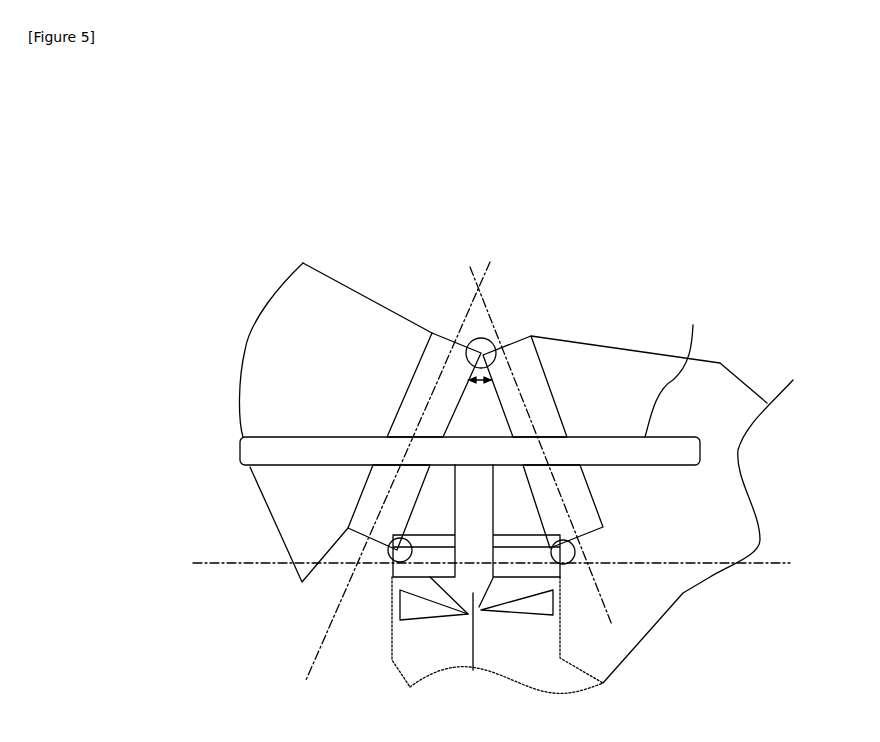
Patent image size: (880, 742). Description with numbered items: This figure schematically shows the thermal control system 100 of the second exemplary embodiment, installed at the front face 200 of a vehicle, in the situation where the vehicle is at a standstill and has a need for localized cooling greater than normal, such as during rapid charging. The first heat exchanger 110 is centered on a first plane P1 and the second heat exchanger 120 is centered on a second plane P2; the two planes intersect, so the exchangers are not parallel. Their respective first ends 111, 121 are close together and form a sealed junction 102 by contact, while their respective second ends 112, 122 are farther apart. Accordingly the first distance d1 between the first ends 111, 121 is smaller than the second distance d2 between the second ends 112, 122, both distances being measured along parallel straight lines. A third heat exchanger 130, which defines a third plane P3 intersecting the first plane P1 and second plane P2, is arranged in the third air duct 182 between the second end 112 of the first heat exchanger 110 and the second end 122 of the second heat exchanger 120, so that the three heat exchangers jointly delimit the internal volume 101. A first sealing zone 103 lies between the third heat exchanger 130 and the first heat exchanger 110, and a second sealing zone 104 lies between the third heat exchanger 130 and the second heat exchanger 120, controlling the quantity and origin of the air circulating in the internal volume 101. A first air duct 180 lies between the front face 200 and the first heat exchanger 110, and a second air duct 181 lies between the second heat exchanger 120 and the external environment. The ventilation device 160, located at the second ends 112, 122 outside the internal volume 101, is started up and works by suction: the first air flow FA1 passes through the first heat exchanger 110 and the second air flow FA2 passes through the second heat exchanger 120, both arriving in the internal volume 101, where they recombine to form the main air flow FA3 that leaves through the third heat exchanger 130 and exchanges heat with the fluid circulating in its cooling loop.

The thermal control system 100 is at (583, 288).
The internal volume 101 is at (442, 524).
The sealed junction 102 is at (503, 350).
The first sealing zone 103 is at (395, 565).
The second sealing zone 104 is at (572, 552).
The first heat exchanger 110 is at (397, 370).
The first end of the first heat exchanger 111 is at (440, 335).
The second end of the first heat exchanger 112 is at (360, 537).
The second heat exchanger 120 is at (592, 548).
The first end of the second heat exchanger 121 is at (500, 348).
The second end of the second heat exchanger 122 is at (607, 540).
The third heat exchanger 130 is at (552, 582).
The ventilation device 160 is at (507, 610).
The first air duct 180 is at (263, 362).
The second air duct 181 is at (693, 513).
The third air duct 182 is at (433, 652).
The front face 200 is at (240, 432).
The first plane P1 is at (465, 303).
The second plane P2 is at (487, 305).
The third plane P3 is at (267, 467).
The first distance d1 is at (480, 387).
The second distance d2 is at (548, 537).
The first air flow FA1 is at (324, 422).
The second air flow FA2 is at (662, 494).
The main air flow FA3 is at (497, 640).